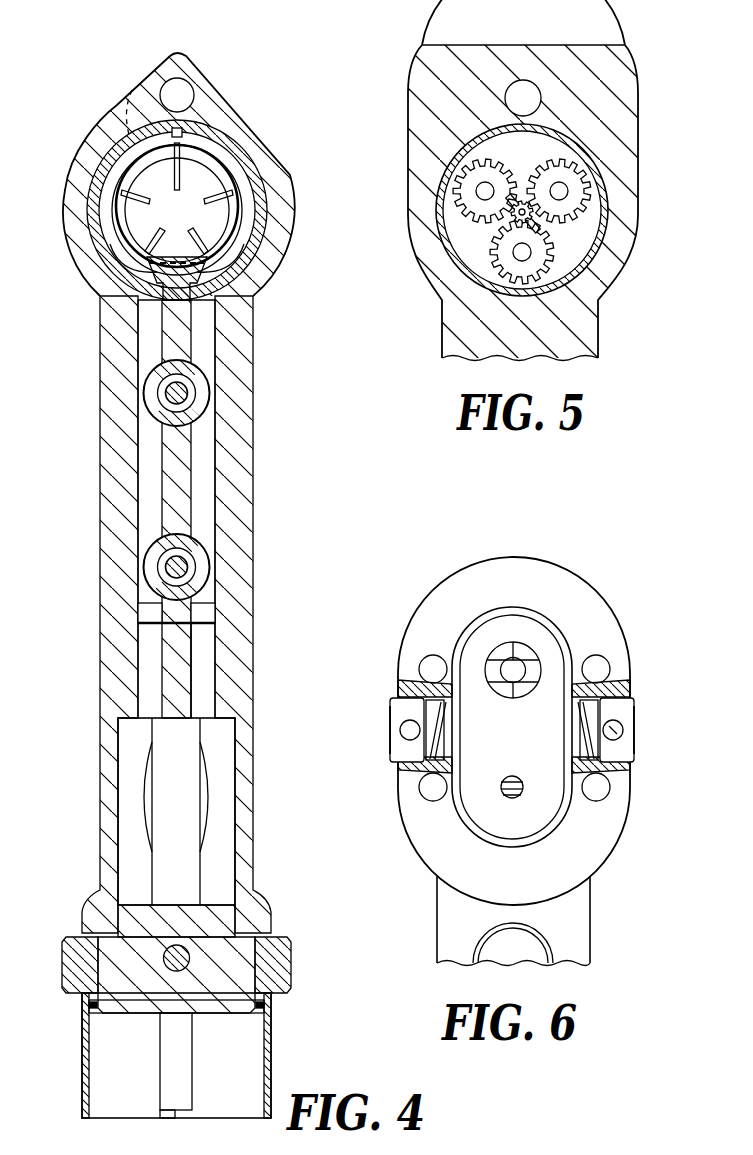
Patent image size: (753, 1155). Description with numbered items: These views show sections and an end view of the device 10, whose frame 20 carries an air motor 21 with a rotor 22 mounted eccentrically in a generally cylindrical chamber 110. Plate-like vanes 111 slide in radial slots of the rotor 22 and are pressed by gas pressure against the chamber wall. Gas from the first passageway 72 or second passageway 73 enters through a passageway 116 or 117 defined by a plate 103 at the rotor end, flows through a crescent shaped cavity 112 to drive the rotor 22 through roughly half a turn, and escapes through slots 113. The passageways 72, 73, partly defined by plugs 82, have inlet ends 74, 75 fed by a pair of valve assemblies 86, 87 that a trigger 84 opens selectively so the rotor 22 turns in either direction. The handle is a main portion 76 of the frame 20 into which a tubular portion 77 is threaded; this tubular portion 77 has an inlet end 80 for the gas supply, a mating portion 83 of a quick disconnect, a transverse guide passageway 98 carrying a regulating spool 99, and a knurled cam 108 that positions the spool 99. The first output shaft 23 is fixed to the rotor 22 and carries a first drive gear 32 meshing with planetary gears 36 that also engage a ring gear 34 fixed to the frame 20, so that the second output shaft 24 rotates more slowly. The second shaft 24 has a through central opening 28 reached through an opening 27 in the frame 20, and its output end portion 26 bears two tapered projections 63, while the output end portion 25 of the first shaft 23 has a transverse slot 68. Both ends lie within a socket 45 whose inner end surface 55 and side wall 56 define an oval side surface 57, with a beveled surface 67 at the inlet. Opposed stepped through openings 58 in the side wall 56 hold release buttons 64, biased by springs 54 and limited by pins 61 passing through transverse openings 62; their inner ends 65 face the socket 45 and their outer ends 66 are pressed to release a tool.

In FIG. 4, the device 10 is at (226, 76).
In FIG. 4, the frame 20 is at (257, 506).
In FIG. 5, the frame 20 is at (606, 341).
In FIG. 6, the frame 20 is at (599, 944).
In FIG. 4, the air motor 21 is at (226, 158).
In FIG. 4, the rotor 22 is at (222, 180).
In FIG. 5, the first output shaft 23 is at (534, 222).
In FIG. 6, the first output shaft 23 is at (517, 800).
In FIG. 6, the second output shaft 24 is at (518, 658).
In FIG. 6, the output end portion of first output shaft 25 is at (513, 775).
In FIG. 6, the output end portion of second output shaft 26 is at (528, 653).
In FIG. 4, the opening through the frame 27 is at (177, 78).
In FIG. 5, the opening through the frame 27 is at (522, 80).
In FIG. 6, the through central opening 28 is at (505, 668).
In FIG. 5, the first drive gear 32 is at (516, 216).
In FIG. 5, the ring gear 34 is at (576, 163).
In FIG. 5, the planetary gears 36 is at (460, 182).
In FIG. 6, the socket 45 is at (560, 795).
In FIG. 6, the springs 54 is at (612, 686).
In FIG. 6, the inner end surface 55 is at (563, 668).
In FIG. 6, the side wall 56 is at (522, 560).
In FIG. 6, the side surface 57 is at (466, 800).
In FIG. 6, the through openings 58 is at (393, 712).
In FIG. 6, the pins 61 is at (407, 737).
In FIG. 6, the transverse openings 62 is at (619, 730).
In FIG. 6, the tapered projections 63 is at (507, 665).
In FIG. 6, the release buttons 64 is at (387, 742).
In FIG. 6, the inner ends 65 is at (455, 732).
In FIG. 6, the outer ends 66 is at (392, 723).
In FIG. 6, the beveled surface 67 is at (504, 848).
In FIG. 6, the transverse slot 68 is at (520, 795).
In FIG. 4, the first passageway 72 is at (148, 335).
In FIG. 4, the second passageway 73 is at (210, 344).
In FIG. 4, the inlet end of first passageway 74 is at (150, 518).
In FIG. 4, the inlet end of second passageway 75 is at (212, 533).
In FIG. 4, the main portion of the frame 76 is at (243, 434).
In FIG. 4, the tubular portion 77 is at (163, 862).
In FIG. 4, the inlet end 80 is at (170, 1113).
In FIG. 4, the plugs 82 is at (148, 618).
In FIG. 4, the mating portion of quick disconnect 83 is at (82, 1096).
In FIG. 6, the trigger 84 is at (503, 950).
In FIG. 4, the valve assembly 86 is at (211, 393).
In FIG. 4, the valve assembly 87 is at (211, 567).
In FIG. 4, the guide passageway 98 is at (170, 970).
In FIG. 4, the spool 99 is at (182, 968).
In FIG. 4, the plate 103 is at (130, 246).
In FIG. 4, the cam 108 is at (72, 948).
In FIG. 4, the cylindrical chamber 110 is at (100, 192).
In FIG. 4, the vanes 111 is at (130, 152).
In FIG. 4, the crescent shaped cavity 112 is at (226, 238).
In FIG. 4, the slots 113 is at (140, 120).
In FIG. 4, the passageway 116 is at (170, 285).
In FIG. 4, the passageway 117 is at (205, 283).